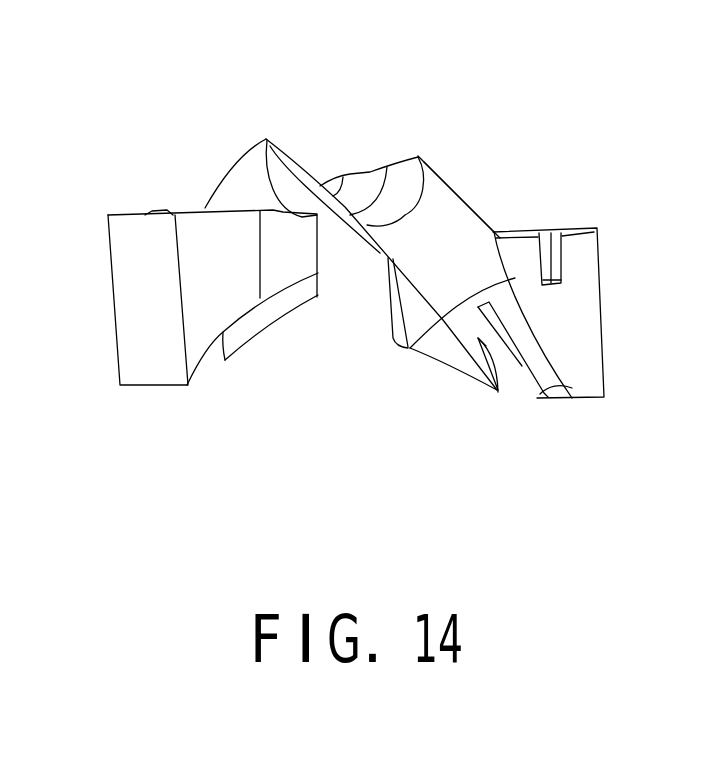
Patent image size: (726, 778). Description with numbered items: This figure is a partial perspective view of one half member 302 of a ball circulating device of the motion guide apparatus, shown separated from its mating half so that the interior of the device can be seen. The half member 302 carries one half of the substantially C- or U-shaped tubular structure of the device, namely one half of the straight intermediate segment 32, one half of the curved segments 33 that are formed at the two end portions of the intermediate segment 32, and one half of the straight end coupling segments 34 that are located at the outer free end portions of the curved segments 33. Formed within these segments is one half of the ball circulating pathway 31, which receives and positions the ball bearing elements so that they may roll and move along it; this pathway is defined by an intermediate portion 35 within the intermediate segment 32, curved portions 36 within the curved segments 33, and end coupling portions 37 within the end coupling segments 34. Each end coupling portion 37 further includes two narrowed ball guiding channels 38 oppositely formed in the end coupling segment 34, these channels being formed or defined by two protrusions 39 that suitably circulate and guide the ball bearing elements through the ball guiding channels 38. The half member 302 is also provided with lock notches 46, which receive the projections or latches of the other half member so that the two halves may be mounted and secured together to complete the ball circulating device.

The half member 302 is at (444, 276).
The ball circulating pathway 31 is at (407, 188).
The intermediate segment 32 is at (380, 169).
The curved segments 33 is at (381, 254).
The end coupling segments 34 is at (133, 324).
The intermediate portion 35 is at (357, 192).
The curved portions 36 is at (458, 237).
The end coupling portions 37 is at (467, 347).
The ball guiding channels 38 is at (522, 367).
The protrusions 39 is at (543, 353).
The lock notches 46 is at (551, 262).